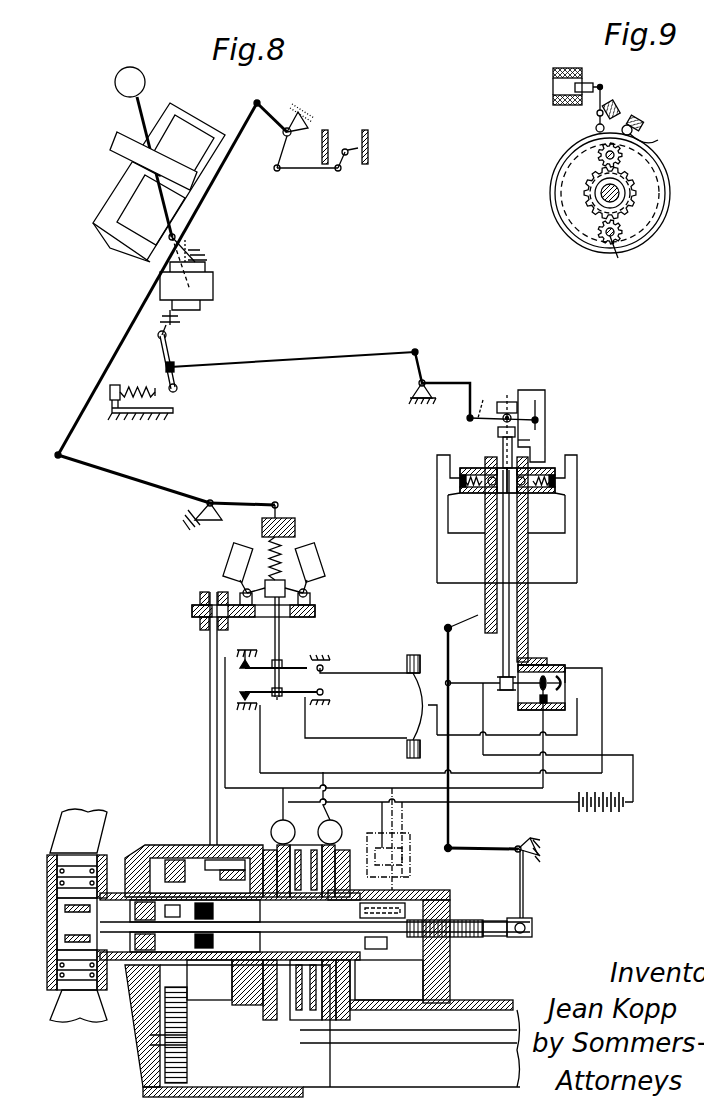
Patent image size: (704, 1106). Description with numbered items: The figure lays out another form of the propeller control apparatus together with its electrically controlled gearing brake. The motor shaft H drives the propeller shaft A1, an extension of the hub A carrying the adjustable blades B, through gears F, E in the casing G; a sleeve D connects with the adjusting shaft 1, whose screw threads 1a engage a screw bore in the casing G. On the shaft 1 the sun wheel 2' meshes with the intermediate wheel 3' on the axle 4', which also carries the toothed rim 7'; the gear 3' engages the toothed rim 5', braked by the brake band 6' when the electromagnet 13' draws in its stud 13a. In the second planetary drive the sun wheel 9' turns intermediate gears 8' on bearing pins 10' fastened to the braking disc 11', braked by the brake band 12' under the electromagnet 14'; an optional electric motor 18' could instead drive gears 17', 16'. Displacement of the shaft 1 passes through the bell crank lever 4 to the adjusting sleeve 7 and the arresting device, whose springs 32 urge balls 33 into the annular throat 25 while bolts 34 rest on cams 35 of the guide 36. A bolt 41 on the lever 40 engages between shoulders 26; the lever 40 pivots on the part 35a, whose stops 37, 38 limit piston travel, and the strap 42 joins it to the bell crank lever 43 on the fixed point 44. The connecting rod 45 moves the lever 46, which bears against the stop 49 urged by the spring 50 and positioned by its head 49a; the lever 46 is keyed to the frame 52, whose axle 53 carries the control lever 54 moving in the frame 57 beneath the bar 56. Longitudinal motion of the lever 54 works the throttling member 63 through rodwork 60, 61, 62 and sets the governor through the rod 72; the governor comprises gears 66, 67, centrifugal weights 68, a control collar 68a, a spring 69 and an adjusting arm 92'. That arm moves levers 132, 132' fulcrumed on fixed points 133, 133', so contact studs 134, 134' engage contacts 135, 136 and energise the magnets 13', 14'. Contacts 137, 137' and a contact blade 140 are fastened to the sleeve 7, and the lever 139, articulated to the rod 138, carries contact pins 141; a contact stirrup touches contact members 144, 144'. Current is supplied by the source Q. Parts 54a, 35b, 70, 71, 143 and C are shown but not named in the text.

In FIG. 8, the control lever 54 is at (125, 90).
In FIG. 8, the control lever 54a is at (145, 170).
In FIG. 8, the bar 56 is at (112, 145).
In FIG. 8, the frame 57 is at (100, 192).
In FIG. 8, the rod 60 is at (206, 190).
In FIG. 8, the rod 61 is at (282, 154).
In FIG. 8, the rod 62 is at (304, 168).
In FIG. 8, the throttling member 63 is at (345, 148).
In FIG. 8, the axle 53 is at (214, 290).
In FIG. 8, the framelike articulation 52 is at (196, 314).
In FIG. 8, the spring 50 is at (160, 362).
In FIG. 8, the lever 46 is at (170, 356).
In FIG. 8, the stop 49 is at (160, 396).
In FIG. 8, the head 49a is at (112, 402).
In FIG. 8, the connecting rod 45 is at (284, 360).
In FIG. 8, the fixed point 44 is at (412, 374).
In FIG. 8, the bell crank lever 43 is at (440, 382).
In FIG. 8, the strap 42 is at (465, 389).
In FIG. 8, the lever 40 is at (484, 402).
In FIG. 8, the bolt 41 is at (502, 420).
In FIG. 8, the shoulders 26 is at (508, 400).
In FIG. 8, the stop 37 is at (528, 392).
In FIG. 8, the part 35a is at (546, 398).
In FIG. 8, the pivot 35b is at (540, 420).
In FIG. 8, the stop 38 is at (530, 448).
In FIG. 8, the balls 33 is at (482, 468).
In FIG. 8, the cams 35 is at (458, 482).
In FIG. 8, the bolts 34 is at (556, 482).
In FIG. 8, the guide 36 is at (436, 514).
In FIG. 8, the annular throat 25 is at (498, 494).
In FIG. 8, the springs 32 is at (518, 494).
In FIG. 8, the adjusting sleeve 7 is at (519, 561).
In FIG. 8, the rod 138 is at (512, 605).
In FIG. 8, the rod 72 is at (94, 388).
In FIG. 8, the lever 71 is at (236, 499).
In FIG. 8, the fixed pivot 70 is at (283, 510).
In FIG. 8, the spring 69 is at (282, 572).
In FIG. 8, the centrifugal weights 68 is at (318, 568).
In FIG. 8, the control collar 68a is at (312, 590).
In FIG. 8, the gear 66 is at (192, 612).
In FIG. 8, the gear 67 is at (315, 612).
In FIG. 8, the adjusting arm 92' is at (295, 647).
In FIG. 8, the contact 135 is at (240, 658).
In FIG. 8, the contact pin 134 is at (234, 669).
In FIG. 8, the contact stud 134' is at (239, 691).
In FIG. 8, the contact 136 is at (246, 704).
In FIG. 8, the lever 132 is at (323, 648).
In FIG. 8, the fixed point 133 is at (365, 662).
In FIG. 8, the fixed point 133' is at (356, 709).
In FIG. 8, the lever 132' is at (283, 711).
In FIG. 8, the contact member 144 is at (400, 660).
In FIG. 8, the relay armature 143 is at (426, 718).
In FIG. 8, the contact member 144' is at (399, 750).
In FIG. 8, the bell crank lever 4 is at (529, 878).
In FIG. 8, the lever 139 is at (465, 680).
In FIG. 8, the contact 137 is at (578, 726).
In FIG. 8, the contact 137' is at (563, 663).
In FIG. 8, the contact pins 141 is at (555, 678).
In FIG. 8, the contact blade 140 is at (568, 680).
In FIG. 8, the source of current Q is at (603, 810).
In FIG. 8, the electromagnet 13' is at (273, 842).
In FIG. 9, the electromagnet 13' is at (562, 97).
In FIG. 8, the intermediate wheel 3' is at (287, 862).
In FIG. 9, the intermediate wheel 3' is at (634, 192).
In FIG. 8, the electromagnet 14' is at (345, 834).
In FIG. 8, the braking disc 11' is at (327, 870).
In FIG. 8, the bearing pins 10' is at (351, 873).
In FIG. 8, the electric motor 18' is at (398, 839).
In FIG. 8, the gear 17' is at (420, 936).
In FIG. 8, the adjustable blades B is at (80, 812).
In FIG. 8, the propeller hub A is at (107, 860).
In FIG. 8, the pulley hub C is at (90, 922).
In FIG. 8, the sleeve D is at (112, 892).
In FIG. 8, the gear E is at (172, 860).
In FIG. 8, the adjusting shaft 1 is at (212, 945).
In FIG. 9, the adjusting shaft 1 is at (620, 193).
In FIG. 8, the axle 4' is at (195, 911).
In FIG. 9, the axle 4' is at (625, 255).
In FIG. 8, the sun wheel 2' is at (195, 942).
In FIG. 9, the sun wheel 2' is at (577, 192).
In FIG. 8, the toothed rim 5' is at (225, 984).
In FIG. 9, the toothed rim 5' is at (651, 123).
In FIG. 8, the propeller shaft A1 is at (118, 965).
In FIG. 8, the casing G is at (140, 1060).
In FIG. 8, the gear F is at (188, 1068).
In FIG. 8, the brake band 6' is at (278, 1013).
In FIG. 9, the brake band 6' is at (603, 193).
In FIG. 8, the toothed rim 7' is at (306, 1013).
In FIG. 8, the brake band 12' is at (343, 1013).
In FIG. 8, the motor shaft H is at (418, 1043).
In FIG. 8, the sun wheel 9' is at (382, 928).
In FIG. 8, the gear 16' is at (389, 941).
In FIG. 8, the intermediate gears 8' is at (387, 980).
In FIG. 8, the screw threads 1a is at (460, 920).
In FIG. 9, the stud 13a is at (602, 84).